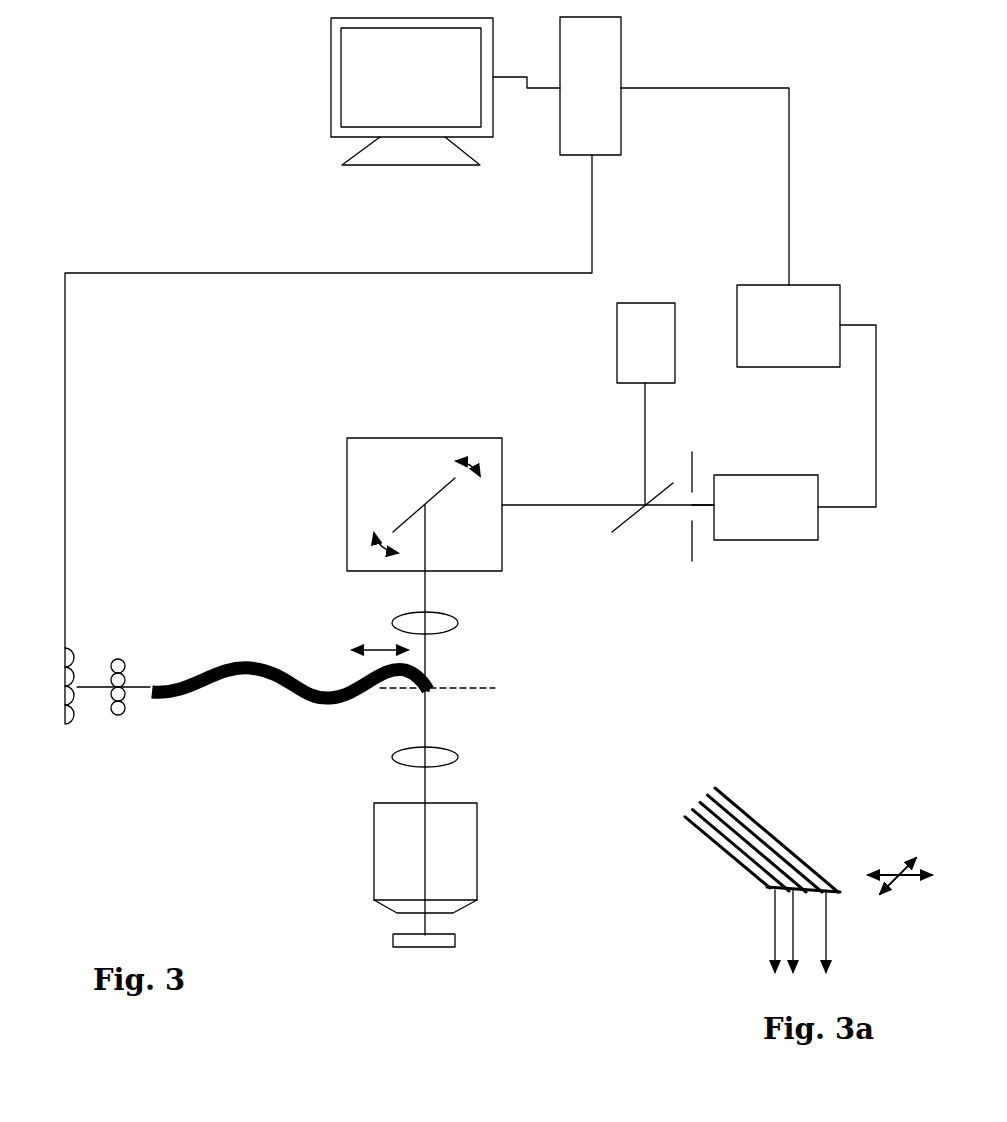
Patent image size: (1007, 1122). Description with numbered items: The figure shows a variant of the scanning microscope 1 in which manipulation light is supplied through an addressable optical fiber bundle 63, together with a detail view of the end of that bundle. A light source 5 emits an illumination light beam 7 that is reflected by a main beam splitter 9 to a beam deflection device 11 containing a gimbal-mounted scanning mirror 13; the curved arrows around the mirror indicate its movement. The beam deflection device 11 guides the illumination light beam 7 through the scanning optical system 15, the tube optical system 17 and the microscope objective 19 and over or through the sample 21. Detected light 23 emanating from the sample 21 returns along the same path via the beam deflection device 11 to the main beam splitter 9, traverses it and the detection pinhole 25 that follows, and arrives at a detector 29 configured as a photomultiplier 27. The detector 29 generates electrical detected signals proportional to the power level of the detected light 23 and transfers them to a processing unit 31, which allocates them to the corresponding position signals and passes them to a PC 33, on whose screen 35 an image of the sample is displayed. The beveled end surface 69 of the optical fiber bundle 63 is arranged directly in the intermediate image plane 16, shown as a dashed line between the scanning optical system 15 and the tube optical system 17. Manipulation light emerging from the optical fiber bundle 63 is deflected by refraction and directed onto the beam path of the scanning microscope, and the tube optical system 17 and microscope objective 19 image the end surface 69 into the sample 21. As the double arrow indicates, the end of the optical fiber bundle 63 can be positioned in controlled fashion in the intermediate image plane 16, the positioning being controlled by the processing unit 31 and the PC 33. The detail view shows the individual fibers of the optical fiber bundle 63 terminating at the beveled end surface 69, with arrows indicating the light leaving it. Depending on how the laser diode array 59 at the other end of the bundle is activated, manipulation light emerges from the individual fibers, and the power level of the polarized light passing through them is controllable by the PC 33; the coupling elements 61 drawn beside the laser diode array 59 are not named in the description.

In FIG. 3, the scanning microscope 1 is at (152, 183).
In FIG. 3, the light source 5 is at (634, 343).
In FIG. 3, the illumination light beam 7 is at (645, 443).
In FIG. 3, the main beam splitter 9 is at (625, 523).
In FIG. 3, the beam deflection device 11 is at (379, 465).
In FIG. 3, the scanning mirror 13 is at (438, 483).
In FIG. 3, the scanning optical system 15 is at (435, 622).
In FIG. 3, the intermediate image plane 16 is at (452, 690).
In FIG. 3, the tube optical system 17 is at (435, 757).
In FIG. 3, the microscope objective 19 is at (458, 853).
In FIG. 3, the sample 21 is at (432, 936).
In FIG. 3, the detected light 23 is at (668, 507).
In FIG. 3, the detection pinhole 25 is at (692, 553).
In FIG. 3, the photomultiplier 27 is at (762, 512).
In FIG. 3, the detector 29 is at (788, 582).
In FIG. 3, the processing unit 31 is at (748, 332).
In FIG. 3, the PC 33 is at (606, 116).
In FIG. 3, the screen 35 is at (390, 68).
In FIG. 3, the laser diode array 59 is at (72, 727).
In FIG. 3, the coupling elements 61 is at (118, 659).
In FIG. 3, the optical fiber bundle 63 is at (232, 694).
In FIG. 3a, the optical fiber bundle 63 is at (750, 838).
In FIG. 3, the beveled end surface 69 is at (423, 693).
In FIG. 3a, the beveled end surface 69 is at (772, 891).